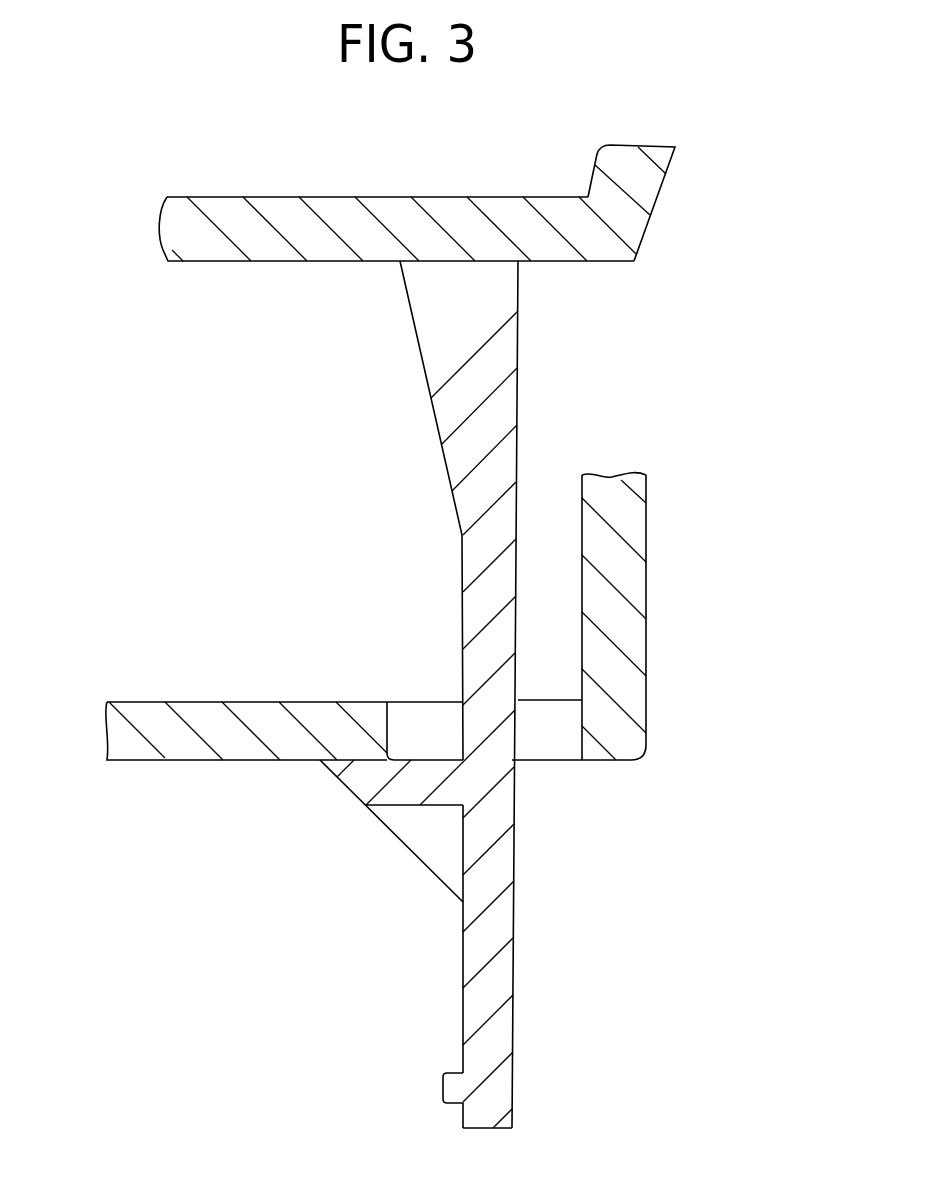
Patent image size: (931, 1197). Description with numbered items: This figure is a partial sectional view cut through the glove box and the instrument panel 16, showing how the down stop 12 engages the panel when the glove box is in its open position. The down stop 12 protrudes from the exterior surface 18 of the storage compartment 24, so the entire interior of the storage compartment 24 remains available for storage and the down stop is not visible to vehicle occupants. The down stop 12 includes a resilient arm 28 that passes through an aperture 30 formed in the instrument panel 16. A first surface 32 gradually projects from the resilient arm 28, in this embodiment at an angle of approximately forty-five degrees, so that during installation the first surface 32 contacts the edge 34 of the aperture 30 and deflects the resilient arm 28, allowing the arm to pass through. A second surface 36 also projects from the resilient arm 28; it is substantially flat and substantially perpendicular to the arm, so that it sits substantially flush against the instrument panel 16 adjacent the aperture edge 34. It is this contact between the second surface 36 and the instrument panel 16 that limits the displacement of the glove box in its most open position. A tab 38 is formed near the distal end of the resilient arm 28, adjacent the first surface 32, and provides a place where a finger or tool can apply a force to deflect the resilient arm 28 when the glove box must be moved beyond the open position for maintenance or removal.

The down stop 12 is at (520, 397).
The instrument panel 16 is at (135, 760).
The exterior surface 18 is at (208, 261).
The storage compartment 24 is at (666, 180).
The resilient arm 28 is at (512, 962).
The aperture 30 is at (555, 760).
The first surface 32 is at (417, 860).
The edge 34 is at (387, 700).
The second surface 36 is at (422, 757).
The tab 38 is at (443, 1090).